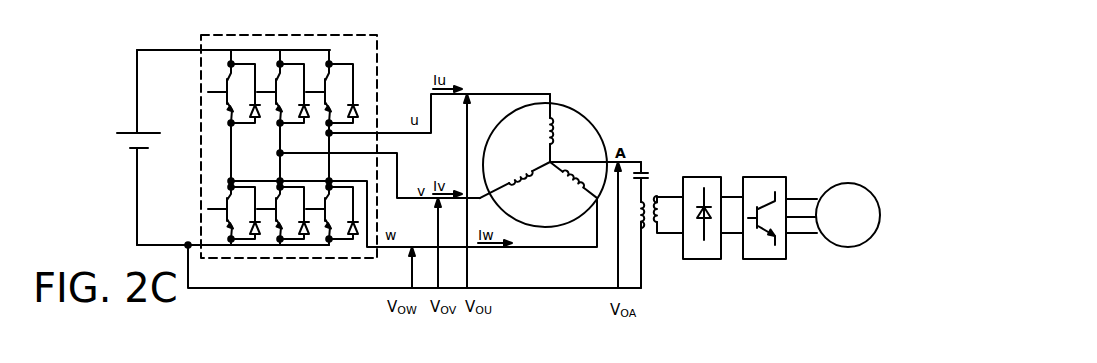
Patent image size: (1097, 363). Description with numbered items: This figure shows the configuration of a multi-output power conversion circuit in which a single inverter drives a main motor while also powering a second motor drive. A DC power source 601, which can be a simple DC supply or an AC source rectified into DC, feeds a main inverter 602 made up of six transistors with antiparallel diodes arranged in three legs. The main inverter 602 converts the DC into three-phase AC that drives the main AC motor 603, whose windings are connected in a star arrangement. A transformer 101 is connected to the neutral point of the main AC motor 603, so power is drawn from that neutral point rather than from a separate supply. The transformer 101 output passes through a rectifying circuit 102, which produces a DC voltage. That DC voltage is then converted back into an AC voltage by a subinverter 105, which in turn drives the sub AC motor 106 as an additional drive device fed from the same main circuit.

The DC power source 601 is at (120, 147).
The main inverter 602 is at (305, 35).
The main AC motor 603 is at (590, 122).
The transformer 101 is at (650, 195).
The rectifying circuit 102 is at (721, 178).
The subinverter 105 is at (788, 177).
The sub AC motor 106 is at (845, 247).